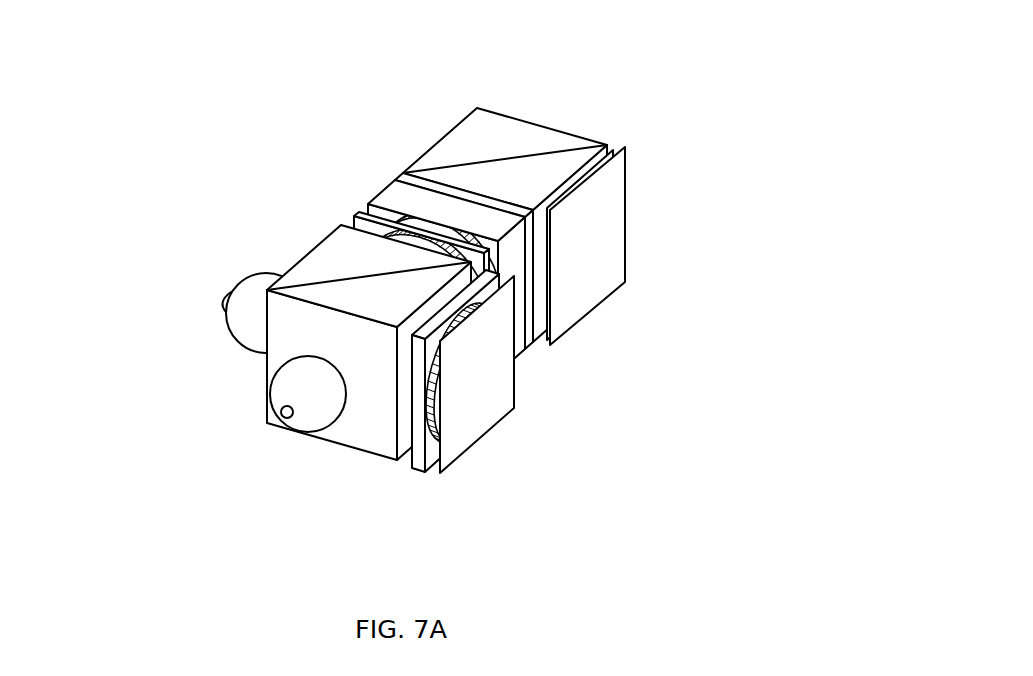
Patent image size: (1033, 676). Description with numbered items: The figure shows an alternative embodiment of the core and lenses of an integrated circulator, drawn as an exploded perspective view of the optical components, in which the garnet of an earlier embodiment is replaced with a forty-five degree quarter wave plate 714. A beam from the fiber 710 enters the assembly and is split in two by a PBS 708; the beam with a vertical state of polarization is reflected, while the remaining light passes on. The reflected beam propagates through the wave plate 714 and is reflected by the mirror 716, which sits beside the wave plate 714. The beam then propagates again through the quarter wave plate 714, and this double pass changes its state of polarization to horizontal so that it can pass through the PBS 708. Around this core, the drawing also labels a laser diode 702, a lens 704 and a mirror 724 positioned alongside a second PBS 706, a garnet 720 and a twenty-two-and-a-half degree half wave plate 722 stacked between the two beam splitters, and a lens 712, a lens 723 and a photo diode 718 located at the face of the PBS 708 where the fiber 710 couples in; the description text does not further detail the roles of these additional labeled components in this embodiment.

The laser diode 702 is at (553, 110).
The lens 704 is at (607, 132).
The polarizing beam splitter (PBS) 706 is at (433, 132).
The PBS 708 is at (300, 242).
The fiber 710 is at (290, 430).
The lens 712 is at (268, 398).
The 45° quarter wave plate 714 is at (416, 482).
The mirror 716 is at (547, 395).
The photo diode 718 is at (205, 303).
The garnet 720 is at (358, 184).
The 22.5 degree half wave plate 722 is at (337, 212).
The lens 723 is at (238, 350).
The mirror 724 is at (628, 243).